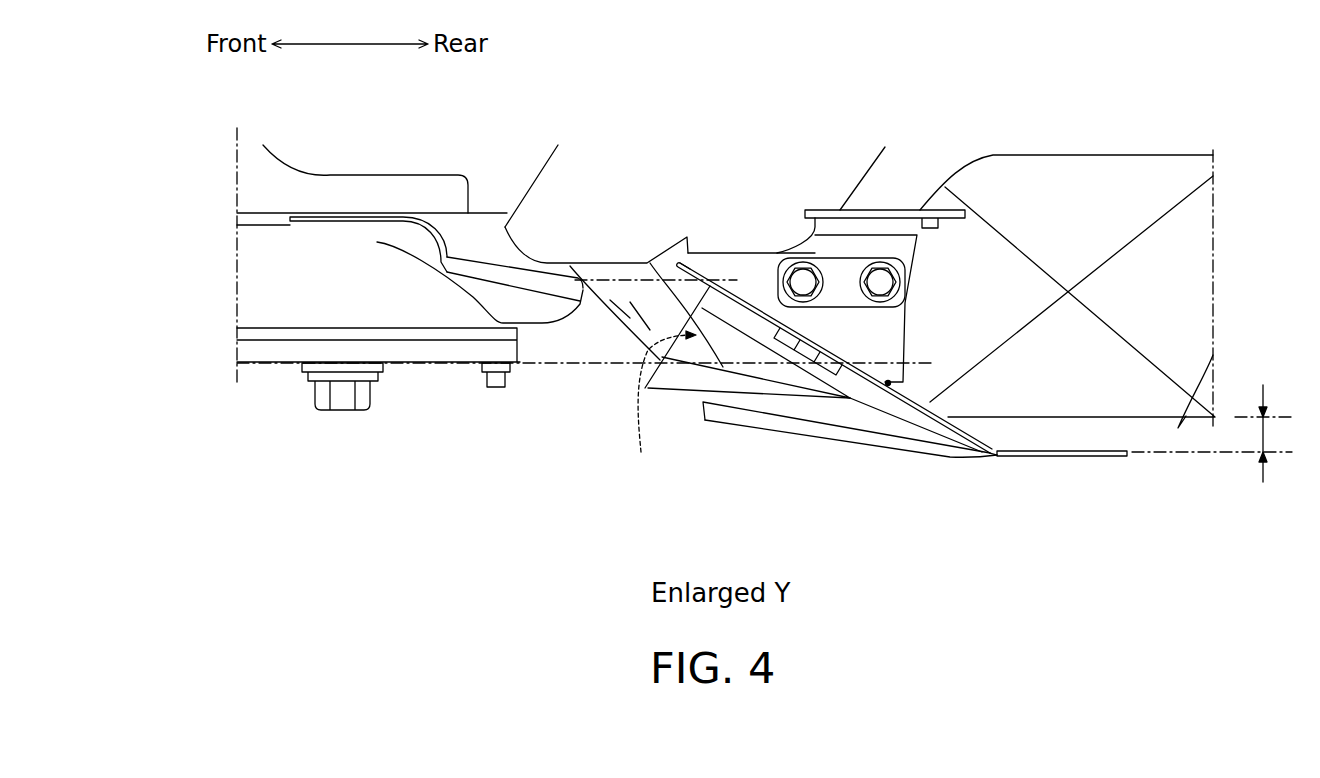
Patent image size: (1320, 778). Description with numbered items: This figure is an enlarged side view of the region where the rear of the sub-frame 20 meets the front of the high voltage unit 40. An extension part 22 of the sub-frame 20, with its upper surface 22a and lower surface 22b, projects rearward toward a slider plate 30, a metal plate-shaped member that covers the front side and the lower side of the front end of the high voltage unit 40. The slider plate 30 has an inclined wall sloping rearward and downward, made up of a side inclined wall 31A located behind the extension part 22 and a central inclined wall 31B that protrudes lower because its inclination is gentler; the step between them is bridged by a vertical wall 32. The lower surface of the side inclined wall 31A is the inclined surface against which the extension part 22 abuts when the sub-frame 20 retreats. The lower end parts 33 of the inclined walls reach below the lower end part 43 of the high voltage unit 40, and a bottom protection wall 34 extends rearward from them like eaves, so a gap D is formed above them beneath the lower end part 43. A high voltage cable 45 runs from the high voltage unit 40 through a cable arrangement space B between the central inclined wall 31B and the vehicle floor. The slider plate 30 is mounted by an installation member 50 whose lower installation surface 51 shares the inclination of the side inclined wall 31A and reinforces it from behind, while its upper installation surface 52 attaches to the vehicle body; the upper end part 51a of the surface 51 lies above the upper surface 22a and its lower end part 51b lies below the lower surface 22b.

The sub-frame 20 is at (273, 367).
The extension part 22 is at (407, 352).
The upper surface 22a is at (558, 278).
The lower surface 22b is at (470, 366).
The slider plate 30 is at (830, 446).
The side inclined wall 31A is at (722, 348).
The central inclined wall 31B is at (676, 397).
The vertical wall 32 is at (690, 395).
The lower end part 33 is at (995, 458).
The bottom protection wall 34 is at (1107, 458).
The high voltage unit 40 is at (1091, 389).
The lower end part 43 is at (1213, 357).
The high voltage cable 45 is at (606, 302).
The installation member 50 is at (753, 250).
The lower installation surface 51 is at (726, 304).
The upper end part 51a is at (697, 268).
The lower end part 51b is at (888, 385).
The upper installation surface 52 is at (767, 248).
The cable arrangement space B is at (662, 406).
The gap D is at (1272, 429).